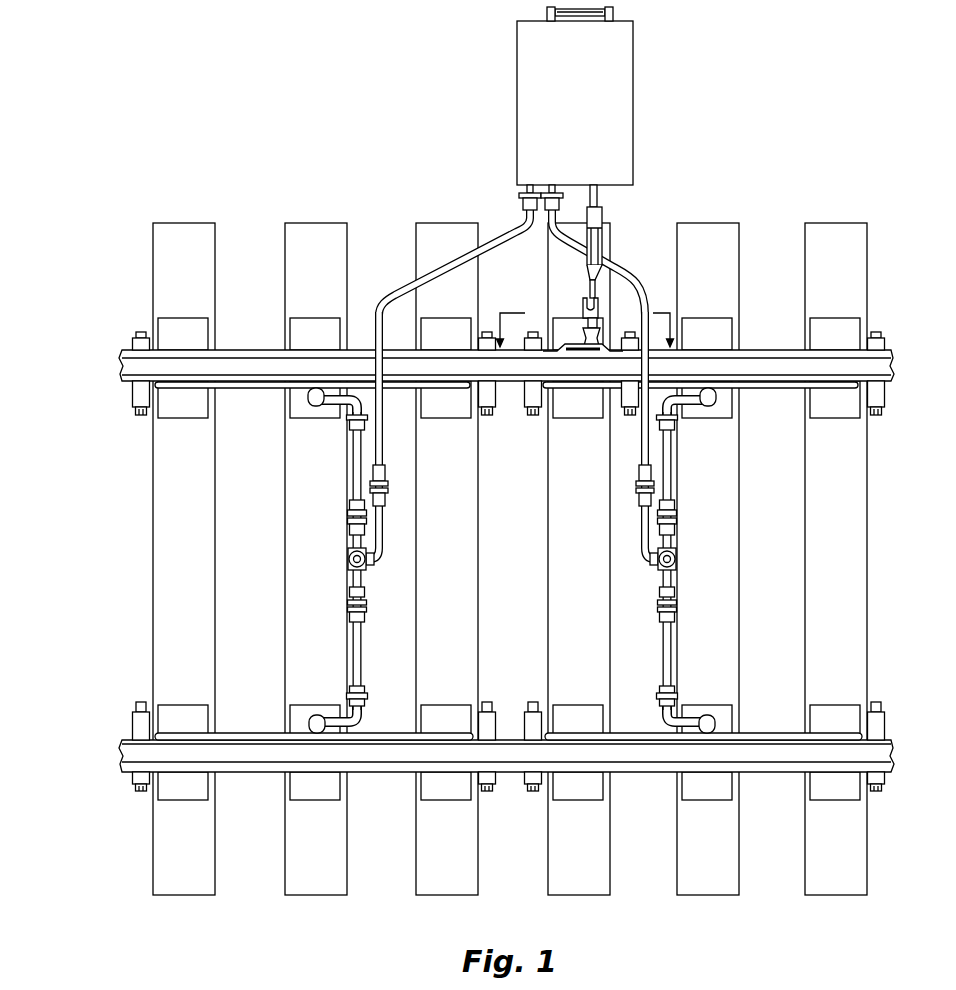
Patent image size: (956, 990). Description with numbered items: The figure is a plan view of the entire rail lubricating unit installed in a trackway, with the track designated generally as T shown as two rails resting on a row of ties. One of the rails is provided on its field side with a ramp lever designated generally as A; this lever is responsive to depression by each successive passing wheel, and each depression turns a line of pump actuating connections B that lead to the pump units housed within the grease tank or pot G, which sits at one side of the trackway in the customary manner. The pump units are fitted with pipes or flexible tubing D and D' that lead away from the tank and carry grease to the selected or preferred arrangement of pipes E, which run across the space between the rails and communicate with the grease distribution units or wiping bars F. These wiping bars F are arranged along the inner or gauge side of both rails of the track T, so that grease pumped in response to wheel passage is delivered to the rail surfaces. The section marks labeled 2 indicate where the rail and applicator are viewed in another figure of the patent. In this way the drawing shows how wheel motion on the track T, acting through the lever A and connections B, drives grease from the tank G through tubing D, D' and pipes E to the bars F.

The grease tank G is at (517, 97).
The pump actuating connections B is at (598, 216).
The ramp lever A is at (569, 343).
The pipe or flexible tubing D is at (454, 372).
The pipe or flexible tubing D' is at (605, 372).
The pipes E is at (363, 630).
The wiping bars F is at (261, 389).
The track T is at (252, 350).
The section line 2- 2 is at (585, 330).